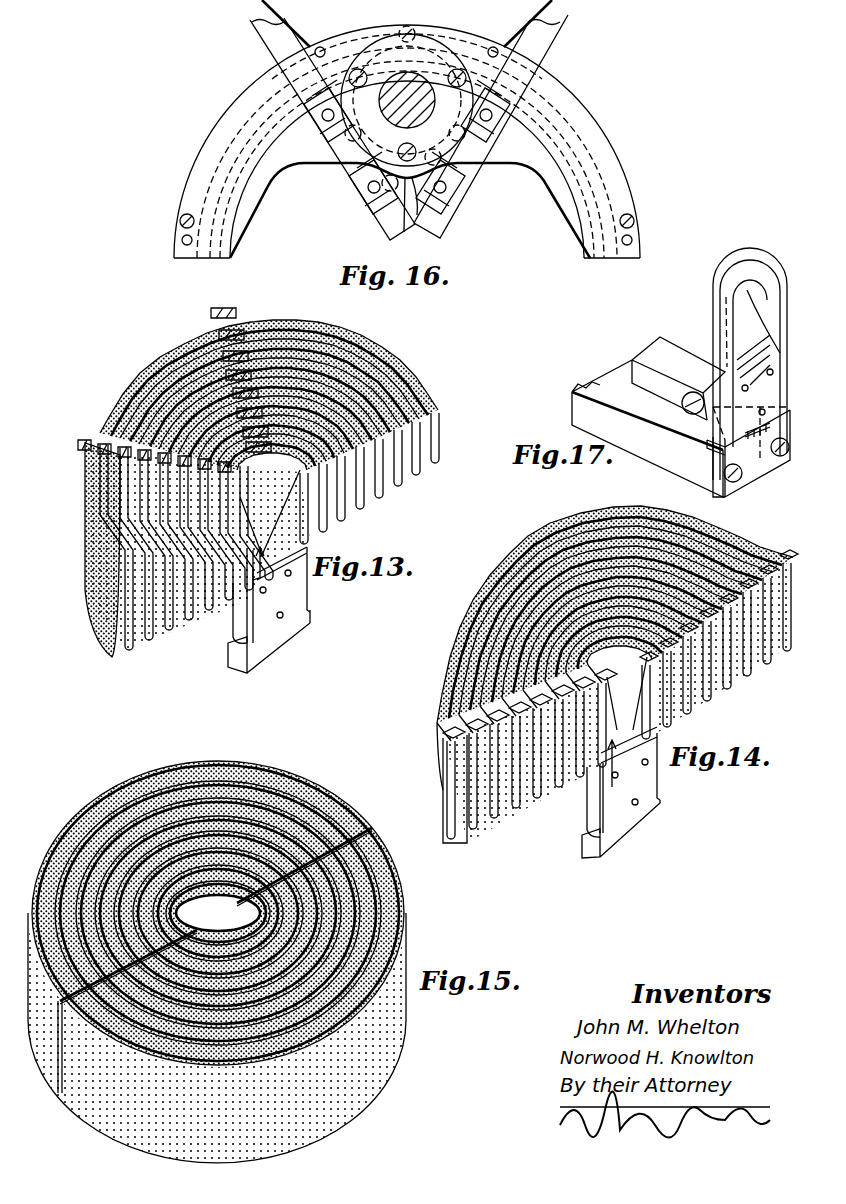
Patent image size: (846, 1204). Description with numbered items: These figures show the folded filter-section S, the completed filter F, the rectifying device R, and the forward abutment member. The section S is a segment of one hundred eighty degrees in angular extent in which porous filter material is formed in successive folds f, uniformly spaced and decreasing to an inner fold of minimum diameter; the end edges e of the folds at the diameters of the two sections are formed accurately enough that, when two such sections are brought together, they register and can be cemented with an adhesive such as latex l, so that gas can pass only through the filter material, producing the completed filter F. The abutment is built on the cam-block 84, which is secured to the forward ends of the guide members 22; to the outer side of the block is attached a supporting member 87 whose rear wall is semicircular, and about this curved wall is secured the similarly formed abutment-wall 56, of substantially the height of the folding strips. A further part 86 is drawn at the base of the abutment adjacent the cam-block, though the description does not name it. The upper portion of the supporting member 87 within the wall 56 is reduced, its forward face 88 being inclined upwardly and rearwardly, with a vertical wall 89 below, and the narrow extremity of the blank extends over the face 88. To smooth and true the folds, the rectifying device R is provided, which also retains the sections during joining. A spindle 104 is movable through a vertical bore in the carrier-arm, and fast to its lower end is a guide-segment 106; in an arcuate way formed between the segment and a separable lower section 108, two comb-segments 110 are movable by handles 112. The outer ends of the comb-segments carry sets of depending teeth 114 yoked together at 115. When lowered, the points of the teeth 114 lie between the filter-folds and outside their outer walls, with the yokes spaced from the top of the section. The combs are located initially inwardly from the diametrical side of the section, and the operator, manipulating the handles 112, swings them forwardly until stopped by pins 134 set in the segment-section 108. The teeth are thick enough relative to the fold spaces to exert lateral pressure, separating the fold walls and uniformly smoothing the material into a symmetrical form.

In FIG. 16, the spindle 104 is at (393, 80).
In FIG. 16, the rectifying device R is at (409, 14).
In FIG. 16, the guide-segment 106 is at (595, 128).
In FIG. 16, the separable lower section 108 is at (583, 256).
In FIG. 16, the comb-segment 110 is at (404, 232).
In FIG. 16, the handle 112 is at (573, 17).
In FIG. 16, the teeth 114 is at (447, 208).
In FIG. 13, the teeth 114 is at (88, 440).
In FIG. 14, the teeth 114 is at (448, 733).
In FIG. 16, the yoke 115 is at (425, 228).
In FIG. 16, the pin 134 is at (632, 238).
In FIG. 17, the guide member 22 is at (618, 355).
In FIG. 13, the abutment-wall 56 is at (247, 610).
In FIG. 14, the abutment-wall 56 is at (603, 803).
In FIG. 17, the abutment-wall 56 is at (758, 321).
In FIG. 17, the cam-block 84 is at (707, 423).
In FIG. 17, the bracket 86 is at (707, 430).
In FIG. 13, the supporting member 87 is at (303, 627).
In FIG. 14, the supporting member 87 is at (657, 813).
In FIG. 17, the supporting member 87 is at (740, 453).
In FIG. 13, the forward face 88 is at (260, 592).
In FIG. 14, the forward face 88 is at (603, 783).
In FIG. 17, the forward face 88 is at (755, 287).
In FIG. 13, the vertical wall 89 is at (276, 594).
In FIG. 14, the vertical wall 89 is at (630, 782).
In FIG. 17, the vertical wall 89 is at (759, 392).
In FIG. 13, the section S is at (269, 437).
In FIG. 14, the section S is at (615, 648).
In FIG. 15, the section S is at (218, 932).
In FIG. 13, the folds f is at (122, 566).
In FIG. 14, the folds f is at (477, 653).
In FIG. 15, the folds f is at (277, 813).
In FIG. 13, the end edges e is at (197, 612).
In FIG. 14, the end edges e is at (563, 787).
In FIG. 15, the filter F is at (217, 953).
In FIG. 15, the latex l is at (58, 1087).